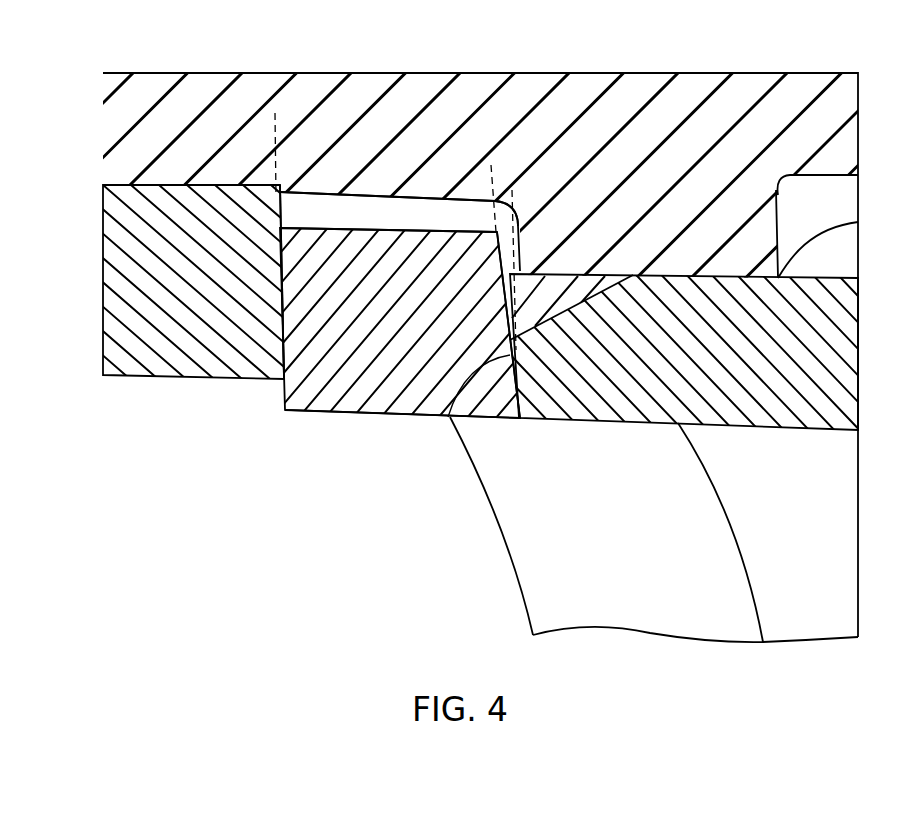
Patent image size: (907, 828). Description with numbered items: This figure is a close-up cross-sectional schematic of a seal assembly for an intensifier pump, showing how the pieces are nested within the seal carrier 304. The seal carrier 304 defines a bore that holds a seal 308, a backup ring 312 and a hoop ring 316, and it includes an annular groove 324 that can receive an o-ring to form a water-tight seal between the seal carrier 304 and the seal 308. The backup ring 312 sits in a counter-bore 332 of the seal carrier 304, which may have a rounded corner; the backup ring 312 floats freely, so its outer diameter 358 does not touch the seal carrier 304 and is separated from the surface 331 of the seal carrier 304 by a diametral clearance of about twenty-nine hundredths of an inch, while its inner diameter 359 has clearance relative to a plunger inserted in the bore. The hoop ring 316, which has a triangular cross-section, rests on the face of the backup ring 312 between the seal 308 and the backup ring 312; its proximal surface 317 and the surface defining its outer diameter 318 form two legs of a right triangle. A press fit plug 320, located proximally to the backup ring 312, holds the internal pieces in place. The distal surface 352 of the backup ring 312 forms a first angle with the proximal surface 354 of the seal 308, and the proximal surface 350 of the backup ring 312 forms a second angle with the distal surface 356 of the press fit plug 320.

The seal carrier 304 is at (308, 70).
The seal 308 is at (648, 422).
The backup ring 312 is at (328, 397).
The hoop ring 316 is at (573, 284).
The proximal surface 317 is at (507, 303).
The surface defining an outer diameter 318 is at (541, 270).
The press fit plug 320 is at (118, 279).
The annular groove 324 is at (807, 190).
The surface of the seal carrier 331 is at (387, 194).
The counter-bore 332 is at (426, 208).
The proximal surface 350 is at (280, 293).
The distal surface 352 is at (497, 256).
The proximal surface 354 is at (448, 416).
The distal surface 356 is at (275, 205).
The outer diameter 358 is at (326, 227).
The inner diameter 359 is at (367, 409).